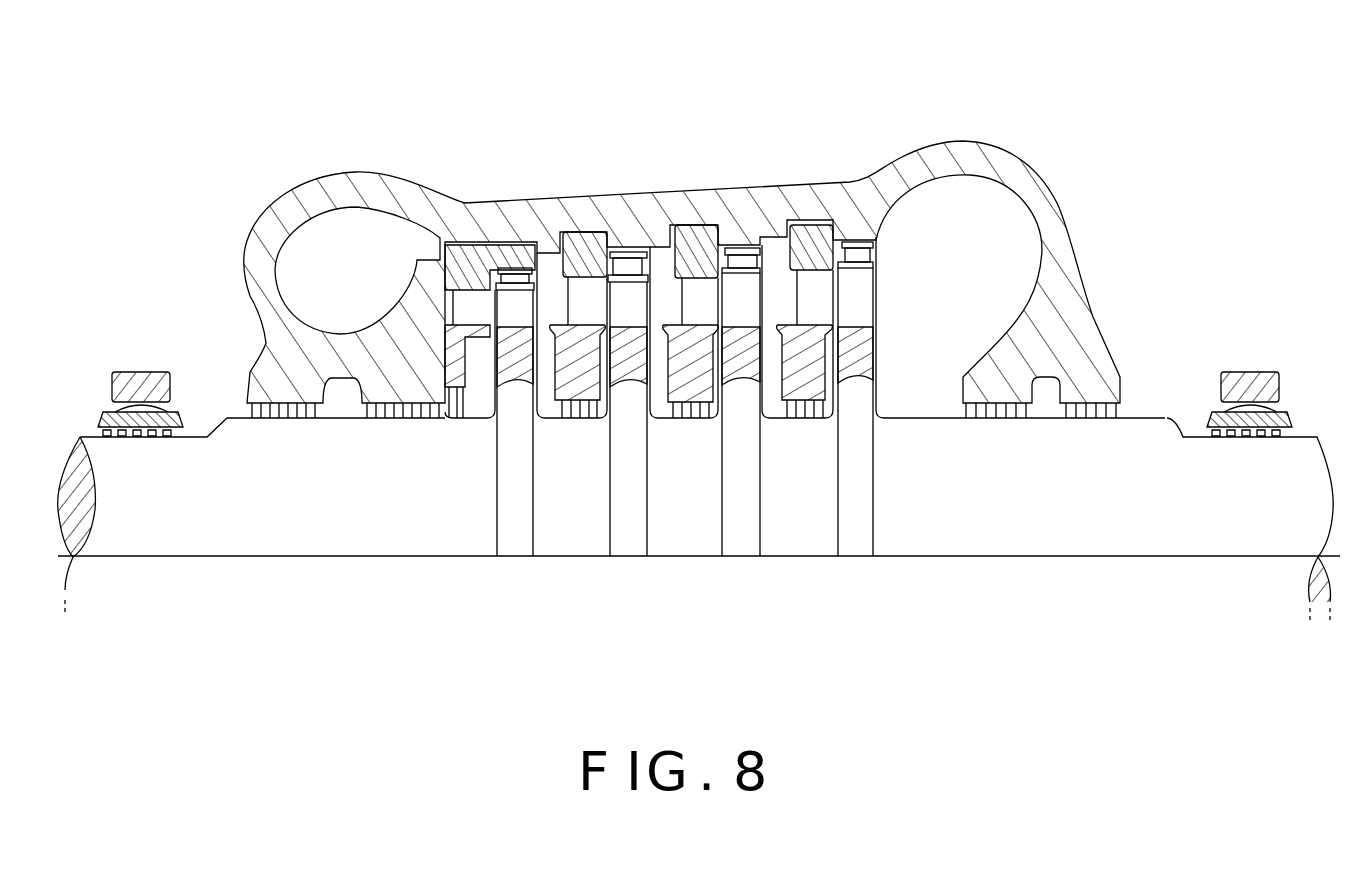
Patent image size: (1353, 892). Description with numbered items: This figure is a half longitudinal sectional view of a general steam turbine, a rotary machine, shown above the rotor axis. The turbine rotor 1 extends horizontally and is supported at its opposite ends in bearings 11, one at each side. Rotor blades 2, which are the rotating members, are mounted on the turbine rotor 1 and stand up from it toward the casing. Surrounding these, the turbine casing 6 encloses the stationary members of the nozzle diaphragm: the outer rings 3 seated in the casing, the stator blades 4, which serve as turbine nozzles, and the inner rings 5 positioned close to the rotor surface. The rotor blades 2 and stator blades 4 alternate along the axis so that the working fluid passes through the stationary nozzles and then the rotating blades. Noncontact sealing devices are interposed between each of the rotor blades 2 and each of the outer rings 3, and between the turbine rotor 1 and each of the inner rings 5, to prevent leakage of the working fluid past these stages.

The turbine rotor 1 is at (707, 497).
The rotor blades 2 is at (633, 302).
The outer rings 3 is at (700, 242).
The stator blades 4 is at (576, 305).
The inner rings 5 is at (671, 378).
The turbine casing 6 is at (853, 210).
The bearings 11 is at (143, 372).